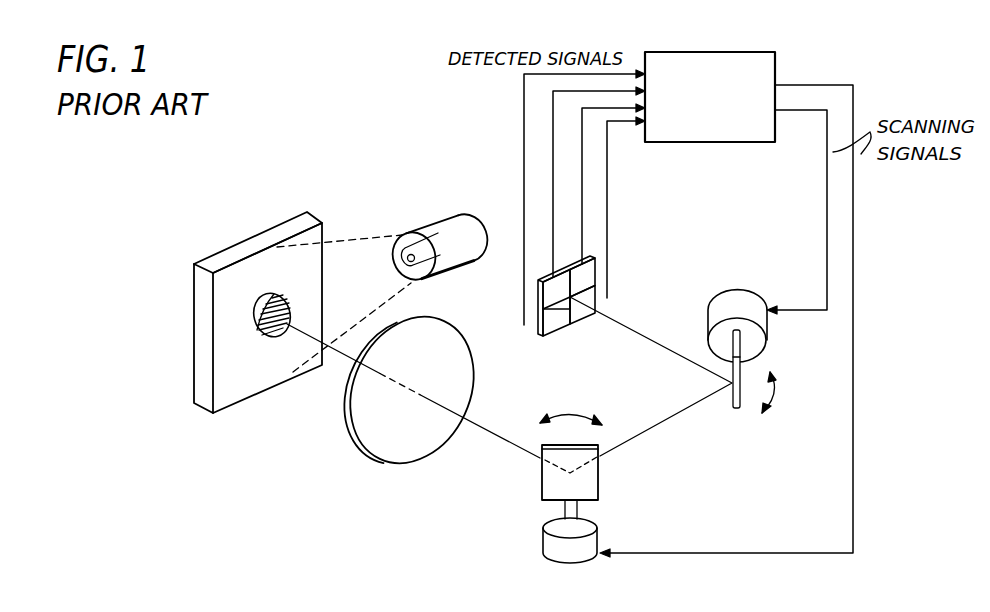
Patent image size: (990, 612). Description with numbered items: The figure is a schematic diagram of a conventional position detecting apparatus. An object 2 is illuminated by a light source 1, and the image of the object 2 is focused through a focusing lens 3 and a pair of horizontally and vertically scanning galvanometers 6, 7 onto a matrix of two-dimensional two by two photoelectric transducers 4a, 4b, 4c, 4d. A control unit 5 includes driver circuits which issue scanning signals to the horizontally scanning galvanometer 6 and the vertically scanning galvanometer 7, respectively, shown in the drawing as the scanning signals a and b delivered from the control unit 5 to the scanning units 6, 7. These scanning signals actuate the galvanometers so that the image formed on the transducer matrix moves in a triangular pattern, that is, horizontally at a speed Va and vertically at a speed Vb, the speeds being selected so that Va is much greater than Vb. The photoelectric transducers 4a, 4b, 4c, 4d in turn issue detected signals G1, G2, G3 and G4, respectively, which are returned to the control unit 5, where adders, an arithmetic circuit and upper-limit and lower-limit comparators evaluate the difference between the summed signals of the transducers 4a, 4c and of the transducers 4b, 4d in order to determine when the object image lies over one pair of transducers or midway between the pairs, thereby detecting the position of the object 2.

The light source 1 is at (446, 216).
The object 2 is at (263, 338).
The focusing lens 3 is at (385, 455).
The photoelectric transducer 4a is at (540, 289).
The photoelectric transducer 4b is at (592, 273).
The photoelectric transducer 4c is at (555, 330).
The photoelectric transducer 4d is at (587, 322).
The control unit 5 is at (732, 52).
The horizontally scanning galvanometer 6 is at (548, 552).
The vertically scanning galvanometer 7 is at (730, 291).
The scanning signal a is at (726, 321).
The scanning signal b is at (797, 212).